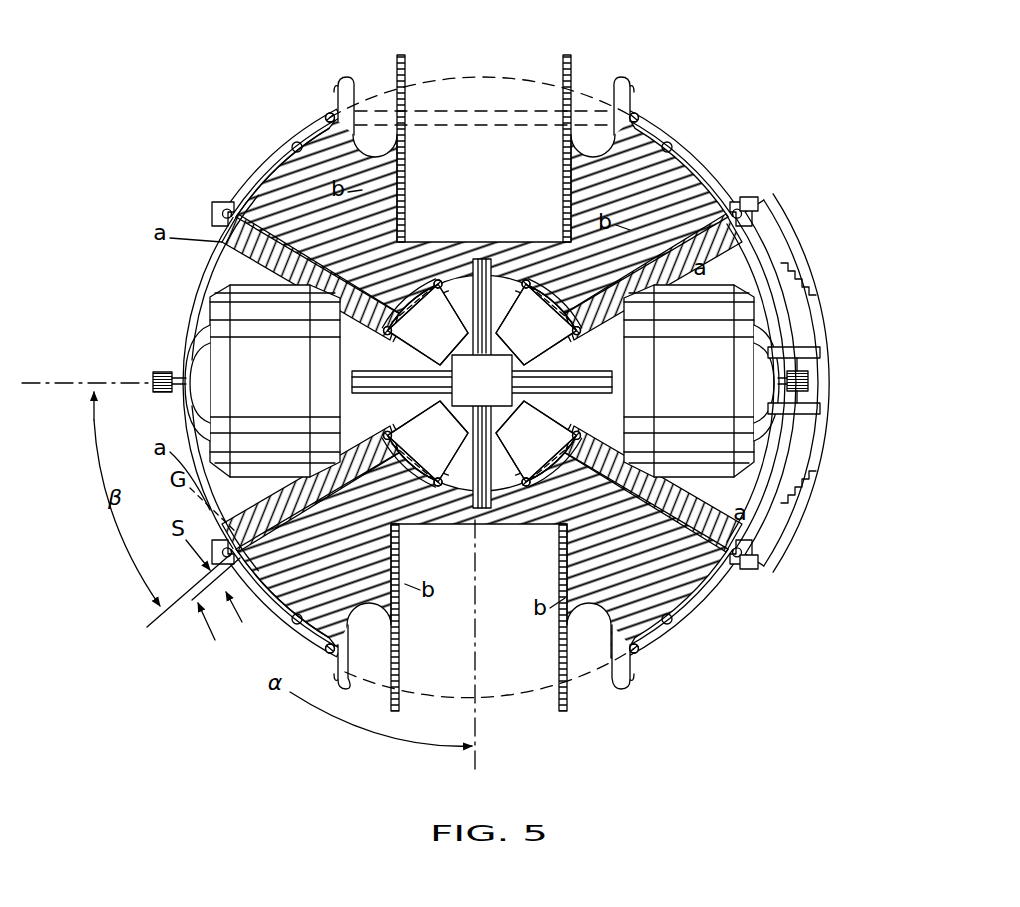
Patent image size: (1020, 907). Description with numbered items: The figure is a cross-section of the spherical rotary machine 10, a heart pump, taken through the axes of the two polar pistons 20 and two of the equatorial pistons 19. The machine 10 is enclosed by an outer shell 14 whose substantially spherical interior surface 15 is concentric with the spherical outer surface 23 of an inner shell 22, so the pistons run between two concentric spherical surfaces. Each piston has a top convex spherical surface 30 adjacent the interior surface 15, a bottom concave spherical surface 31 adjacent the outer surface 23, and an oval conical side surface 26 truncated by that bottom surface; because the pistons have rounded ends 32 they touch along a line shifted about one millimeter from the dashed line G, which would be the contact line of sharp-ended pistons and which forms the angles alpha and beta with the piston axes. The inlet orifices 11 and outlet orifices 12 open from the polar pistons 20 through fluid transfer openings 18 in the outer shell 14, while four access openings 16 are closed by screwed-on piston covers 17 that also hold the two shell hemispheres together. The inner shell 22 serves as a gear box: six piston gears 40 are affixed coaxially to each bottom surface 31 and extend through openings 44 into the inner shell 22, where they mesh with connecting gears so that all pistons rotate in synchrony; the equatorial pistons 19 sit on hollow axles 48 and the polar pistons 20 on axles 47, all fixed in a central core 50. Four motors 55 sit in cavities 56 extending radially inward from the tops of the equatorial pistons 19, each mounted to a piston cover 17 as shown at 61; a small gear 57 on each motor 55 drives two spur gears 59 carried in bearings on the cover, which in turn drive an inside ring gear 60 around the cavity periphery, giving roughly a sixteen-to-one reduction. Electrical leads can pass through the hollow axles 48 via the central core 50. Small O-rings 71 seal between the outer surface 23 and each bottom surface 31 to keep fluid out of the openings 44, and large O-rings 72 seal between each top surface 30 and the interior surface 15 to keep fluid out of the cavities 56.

The spherical rotary machine 10 is at (703, 145).
The inlet orifices 11 is at (578, 105).
The outlet orifices 12 is at (492, 75).
The outer shell 14 is at (270, 168).
The spherical interior surface 15 is at (296, 143).
The access openings 16 is at (192, 445).
The piston covers 17 is at (830, 436).
The fluid transfer openings 18 is at (346, 78).
The equatorial pistons 19 is at (212, 212).
The polar pistons 20 is at (690, 150).
The inner shell 22 is at (560, 205).
The spherical outer surface 23 is at (375, 382).
The oval conical side surface 26 is at (222, 235).
The top convex spherical surface 30 is at (252, 172).
The bottom concave spherical surface 31 is at (588, 447).
The rounded ends 32 is at (285, 262).
The piston gears 40 is at (478, 258).
The openings 44 is at (555, 320).
The axles 47 is at (483, 258).
The hollow axles 48 is at (352, 385).
The central core 50 is at (466, 380).
The motors 55 is at (238, 364).
The cavities 56 is at (198, 300).
The small gear 57 is at (155, 372).
The spur gears 59 is at (812, 300).
The inside ring gear 60 is at (760, 205).
The motor mounting 61 is at (822, 350).
The small O-rings 71 is at (360, 335).
The large O-rings 72 is at (328, 112).